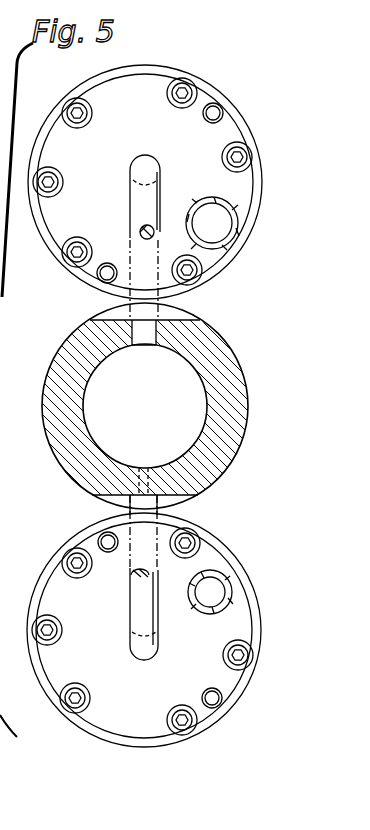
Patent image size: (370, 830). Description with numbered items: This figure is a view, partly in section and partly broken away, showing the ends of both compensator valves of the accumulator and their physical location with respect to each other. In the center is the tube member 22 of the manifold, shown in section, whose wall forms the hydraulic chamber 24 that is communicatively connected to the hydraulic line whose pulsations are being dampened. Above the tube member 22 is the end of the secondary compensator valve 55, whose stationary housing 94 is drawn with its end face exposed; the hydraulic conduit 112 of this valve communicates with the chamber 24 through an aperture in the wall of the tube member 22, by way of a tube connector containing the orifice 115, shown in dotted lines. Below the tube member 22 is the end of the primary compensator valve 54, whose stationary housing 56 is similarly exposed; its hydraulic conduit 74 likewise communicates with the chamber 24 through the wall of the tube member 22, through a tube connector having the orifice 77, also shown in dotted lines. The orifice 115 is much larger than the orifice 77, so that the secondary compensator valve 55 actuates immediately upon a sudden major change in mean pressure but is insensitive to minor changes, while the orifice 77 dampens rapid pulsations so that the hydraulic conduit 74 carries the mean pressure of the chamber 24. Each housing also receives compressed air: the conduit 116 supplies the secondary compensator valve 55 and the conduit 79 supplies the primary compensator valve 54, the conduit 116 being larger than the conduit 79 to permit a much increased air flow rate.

The secondary compensator valve 55 is at (240, 98).
The stationary housing 94 is at (247, 132).
The hydraulic conduit 112 is at (152, 197).
The conduit 116 is at (237, 223).
The tube member 22 is at (235, 382).
The hydraulic chamber 24 is at (181, 425).
The orifice 115 is at (151, 336).
The orifice 77 is at (146, 470).
The hydraulic conduit 74 is at (138, 604).
The conduit 79 is at (230, 562).
The primary compensator valve 54 is at (261, 597).
The stationary housing 56 is at (256, 628).